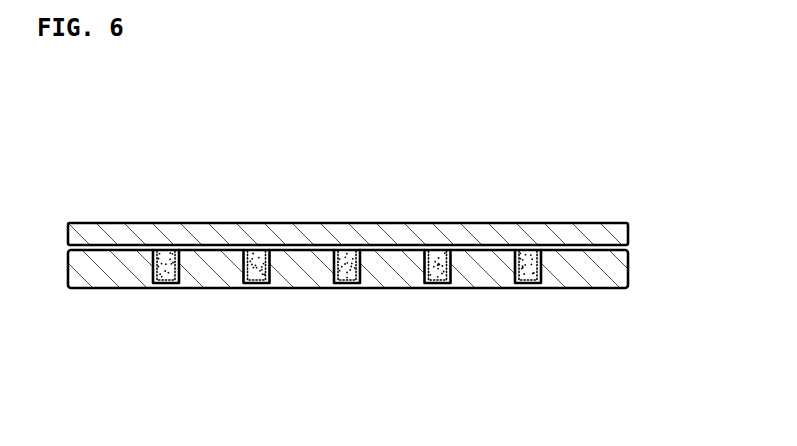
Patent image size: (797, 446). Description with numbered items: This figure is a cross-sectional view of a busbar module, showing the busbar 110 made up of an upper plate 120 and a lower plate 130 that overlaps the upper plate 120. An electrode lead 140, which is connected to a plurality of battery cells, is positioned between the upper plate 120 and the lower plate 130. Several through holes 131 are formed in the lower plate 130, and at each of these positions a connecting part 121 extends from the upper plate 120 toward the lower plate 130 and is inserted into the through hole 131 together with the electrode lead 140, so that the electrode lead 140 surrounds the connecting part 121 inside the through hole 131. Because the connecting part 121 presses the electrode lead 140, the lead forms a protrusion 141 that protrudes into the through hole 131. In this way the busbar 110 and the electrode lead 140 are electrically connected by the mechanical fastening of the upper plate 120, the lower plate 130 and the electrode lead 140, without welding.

The busbar 110 is at (408, 255).
The upper plate 120 is at (628, 233).
The connecting part 121 is at (527, 250).
The lower plate 130 is at (628, 268).
The through hole 131 is at (170, 288).
The electrode lead 140 is at (572, 250).
The protrusion 141 is at (525, 288).